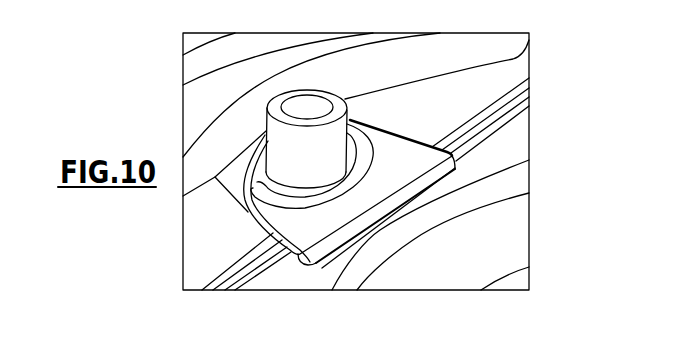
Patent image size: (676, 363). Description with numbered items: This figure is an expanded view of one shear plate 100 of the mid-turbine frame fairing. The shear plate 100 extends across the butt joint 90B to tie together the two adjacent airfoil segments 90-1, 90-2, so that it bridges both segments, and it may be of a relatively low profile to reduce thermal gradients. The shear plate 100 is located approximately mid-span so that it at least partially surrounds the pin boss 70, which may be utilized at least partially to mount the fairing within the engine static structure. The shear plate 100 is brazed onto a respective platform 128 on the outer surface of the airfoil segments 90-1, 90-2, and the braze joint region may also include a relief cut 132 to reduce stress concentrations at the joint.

The pin boss 70 is at (338, 139).
The shear plate 100 is at (312, 230).
The platform 128 is at (353, 233).
The relief cut 132 is at (418, 138).
The airfoil segment 90-1 is at (203, 262).
The airfoil segment 90-2 is at (270, 280).
The butt joint 90B is at (508, 102).